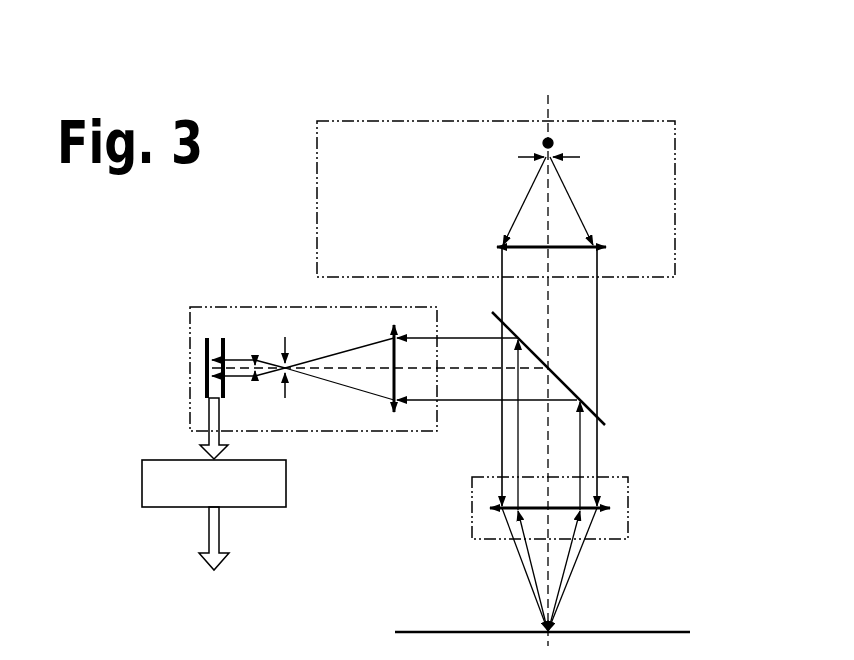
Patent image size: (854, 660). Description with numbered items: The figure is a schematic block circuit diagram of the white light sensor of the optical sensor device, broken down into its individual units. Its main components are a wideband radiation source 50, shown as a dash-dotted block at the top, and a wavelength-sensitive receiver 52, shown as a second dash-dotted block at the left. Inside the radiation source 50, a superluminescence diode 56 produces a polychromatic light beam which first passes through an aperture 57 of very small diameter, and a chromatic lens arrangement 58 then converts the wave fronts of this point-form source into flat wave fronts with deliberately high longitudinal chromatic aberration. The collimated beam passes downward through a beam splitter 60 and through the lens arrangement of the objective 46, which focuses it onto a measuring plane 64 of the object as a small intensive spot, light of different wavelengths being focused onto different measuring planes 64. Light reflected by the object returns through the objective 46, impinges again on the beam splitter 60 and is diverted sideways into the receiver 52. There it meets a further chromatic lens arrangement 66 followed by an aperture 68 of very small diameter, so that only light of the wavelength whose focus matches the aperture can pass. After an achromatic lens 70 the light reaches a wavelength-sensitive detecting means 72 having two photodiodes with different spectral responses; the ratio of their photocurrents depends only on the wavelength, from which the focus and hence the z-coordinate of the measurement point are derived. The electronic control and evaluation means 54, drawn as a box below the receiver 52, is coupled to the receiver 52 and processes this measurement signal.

The objective 46 is at (627, 490).
The wideband radiation source 50 is at (677, 175).
The wavelength-sensitive receiver 52 is at (188, 410).
The electronic control and evaluation means 54 is at (150, 483).
The superluminescence diode 56 is at (553, 140).
The aperture 57 is at (530, 155).
The chromatic lens arrangement 58 is at (497, 247).
The beam splitter 60 is at (573, 393).
The measuring plane 64 is at (652, 632).
The further chromatic lens arrangement 66 is at (394, 413).
The aperture 68 is at (286, 365).
The achromatic lens 70 is at (254, 356).
The wavelength-sensitive detecting means 72 is at (206, 360).